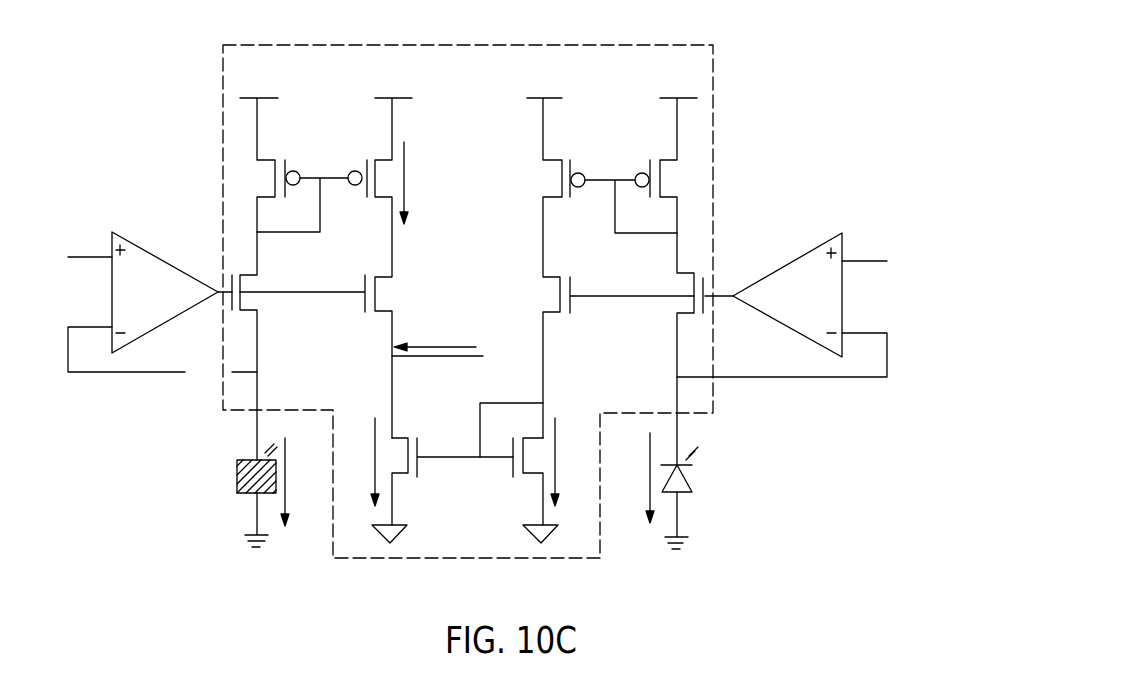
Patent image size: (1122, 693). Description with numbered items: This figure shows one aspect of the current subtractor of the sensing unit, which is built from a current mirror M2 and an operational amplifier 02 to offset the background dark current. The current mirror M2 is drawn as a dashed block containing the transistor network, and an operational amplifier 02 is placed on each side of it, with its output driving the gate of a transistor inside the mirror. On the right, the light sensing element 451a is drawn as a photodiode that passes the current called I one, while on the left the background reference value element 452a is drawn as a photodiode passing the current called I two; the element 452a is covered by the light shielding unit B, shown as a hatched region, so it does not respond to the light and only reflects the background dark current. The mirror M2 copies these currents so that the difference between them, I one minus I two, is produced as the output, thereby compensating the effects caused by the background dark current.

The current mirror M2 is at (715, 112).
The operational amplifier 02 is at (165, 260).
The background reference value element 452a is at (237, 476).
The light sensing element 451a is at (685, 478).
The light shielding unit B is at (248, 495).